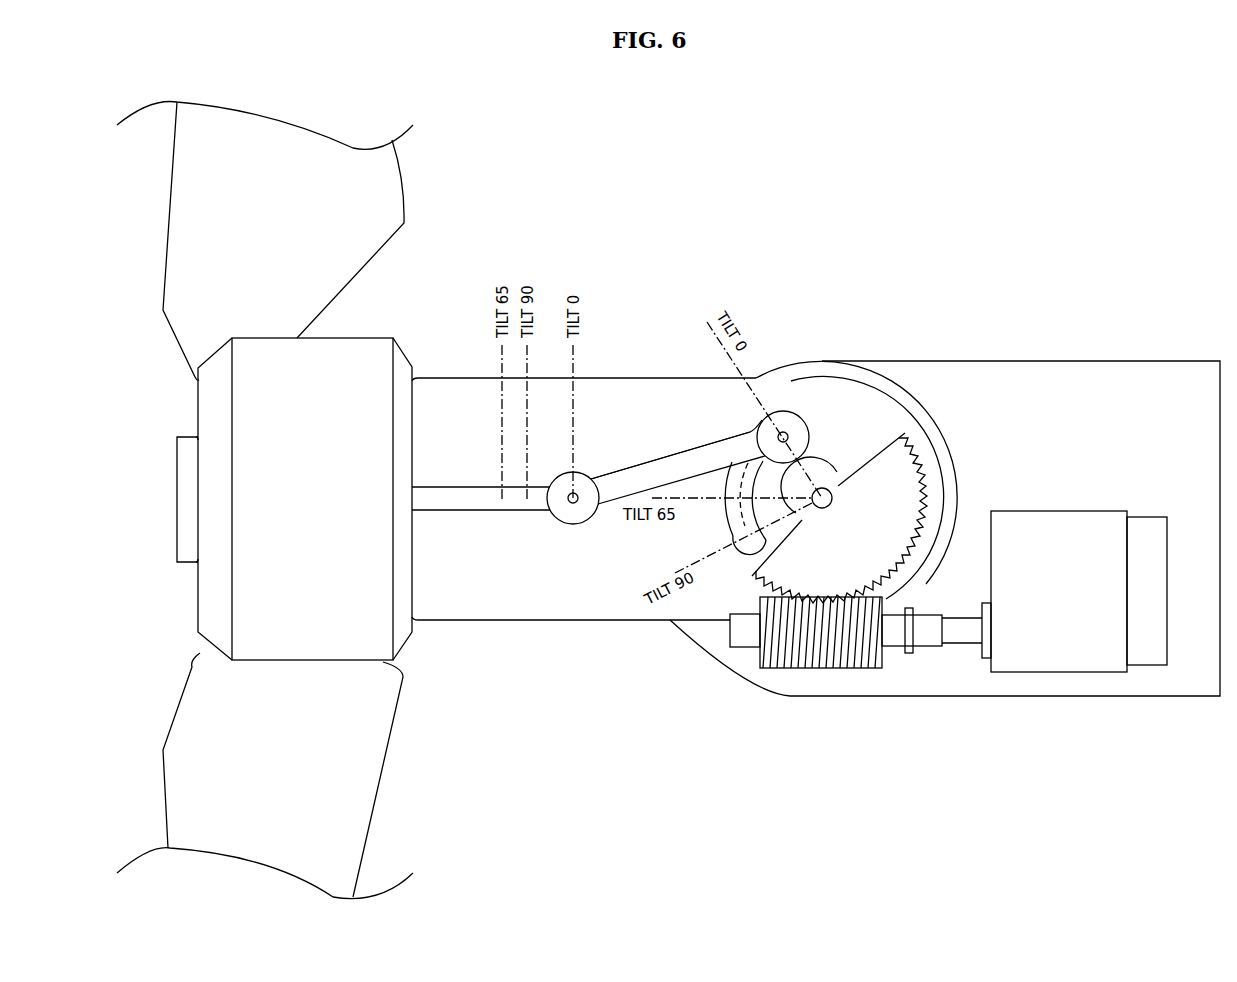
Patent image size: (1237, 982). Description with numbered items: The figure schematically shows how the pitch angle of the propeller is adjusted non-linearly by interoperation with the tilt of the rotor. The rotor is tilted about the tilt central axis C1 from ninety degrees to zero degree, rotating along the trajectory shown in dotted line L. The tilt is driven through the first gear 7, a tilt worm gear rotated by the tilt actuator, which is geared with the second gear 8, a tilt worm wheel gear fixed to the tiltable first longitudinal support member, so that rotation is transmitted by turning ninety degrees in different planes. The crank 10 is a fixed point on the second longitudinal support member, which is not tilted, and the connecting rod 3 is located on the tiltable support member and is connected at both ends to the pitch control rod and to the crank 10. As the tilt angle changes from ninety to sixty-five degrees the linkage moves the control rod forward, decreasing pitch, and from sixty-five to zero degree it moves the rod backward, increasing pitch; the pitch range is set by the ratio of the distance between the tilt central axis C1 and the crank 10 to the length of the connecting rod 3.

The connecting rod 3 is at (647, 470).
The dotted line trajectory L is at (745, 487).
The crank 10 is at (791, 423).
The tilt central axis C1 is at (837, 490).
The second gear 8 is at (903, 443).
The first gear 7 is at (792, 667).